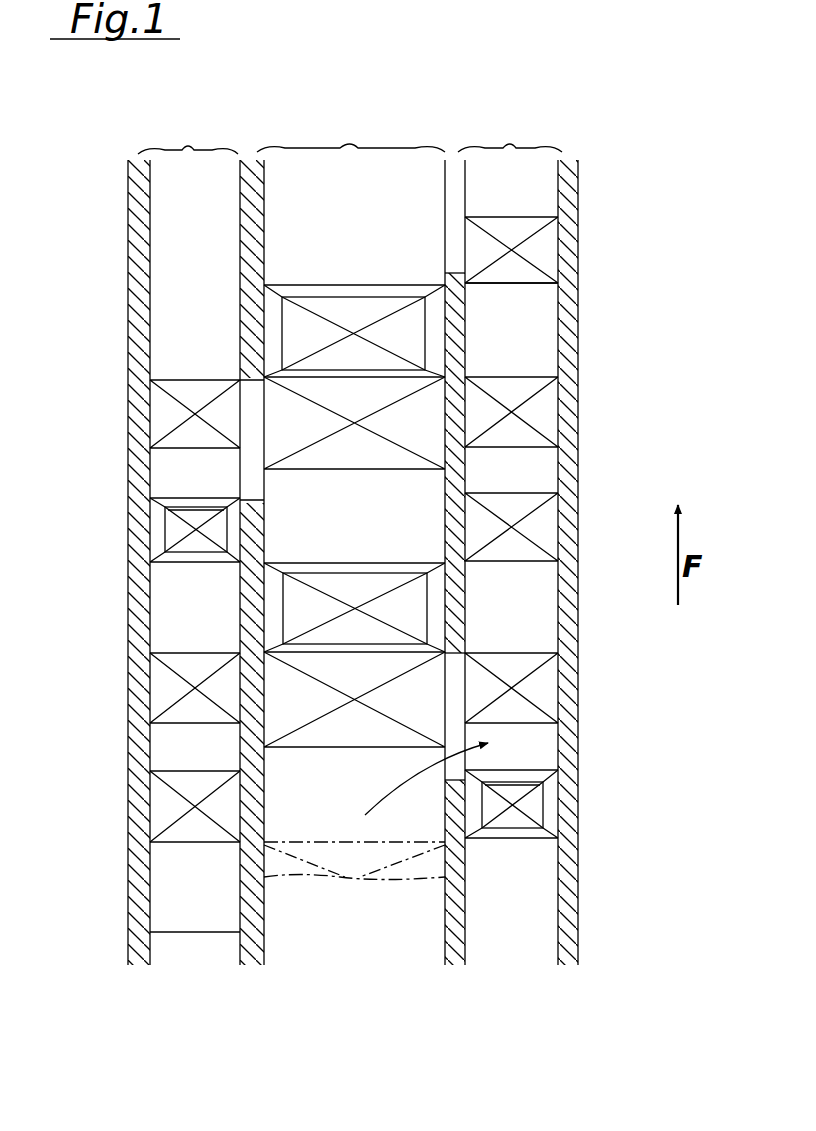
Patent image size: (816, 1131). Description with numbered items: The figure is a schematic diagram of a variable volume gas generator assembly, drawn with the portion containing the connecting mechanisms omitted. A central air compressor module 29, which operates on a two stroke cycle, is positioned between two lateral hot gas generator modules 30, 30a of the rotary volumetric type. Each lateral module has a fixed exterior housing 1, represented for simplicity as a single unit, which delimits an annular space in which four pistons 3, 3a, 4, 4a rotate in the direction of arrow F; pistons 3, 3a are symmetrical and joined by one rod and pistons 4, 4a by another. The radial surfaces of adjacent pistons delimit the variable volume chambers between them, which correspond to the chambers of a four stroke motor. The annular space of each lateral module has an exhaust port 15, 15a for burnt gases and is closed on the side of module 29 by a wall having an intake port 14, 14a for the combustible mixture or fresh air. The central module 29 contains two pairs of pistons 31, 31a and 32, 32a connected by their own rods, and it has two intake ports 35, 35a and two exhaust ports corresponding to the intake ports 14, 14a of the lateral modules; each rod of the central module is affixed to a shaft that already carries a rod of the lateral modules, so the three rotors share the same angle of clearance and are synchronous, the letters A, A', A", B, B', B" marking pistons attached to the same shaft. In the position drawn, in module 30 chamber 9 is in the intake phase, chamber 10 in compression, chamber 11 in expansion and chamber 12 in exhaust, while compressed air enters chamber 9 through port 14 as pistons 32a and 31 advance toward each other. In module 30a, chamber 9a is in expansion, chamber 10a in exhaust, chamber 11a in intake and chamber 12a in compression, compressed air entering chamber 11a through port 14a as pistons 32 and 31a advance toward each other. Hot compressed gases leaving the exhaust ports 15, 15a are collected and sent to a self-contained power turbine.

The fixed exterior housing 1 is at (562, 190).
The piston 3 is at (163, 693).
The piston 3a is at (162, 415).
The piston 4 is at (163, 810).
The piston 4a is at (158, 545).
The variable volume chamber 9 is at (518, 750).
The variable volume chamber 9a is at (170, 743).
The variable volume chamber 10 is at (528, 640).
The variable volume chamber 10a is at (167, 615).
The variable volume chamber 11 is at (540, 480).
The variable volume chamber 11a is at (163, 480).
The variable volume chamber 12 is at (523, 350).
The variable volume chamber 12a is at (175, 327).
The intake port 14 is at (485, 705).
The intake port 14a is at (250, 455).
The exhaust port 15 is at (513, 825).
The exhaust port 15a is at (196, 548).
The central air compressor module 29 is at (351, 130).
The hot gas generator module 30 is at (510, 130).
The hot gas generator module 30a is at (189, 522).
The piston 31 is at (349, 748).
The piston 31a is at (418, 413).
The piston 32 is at (440, 618).
The piston 32a is at (436, 320).
The intake port 35 is at (224, 470).
The intake port 35a is at (350, 290).